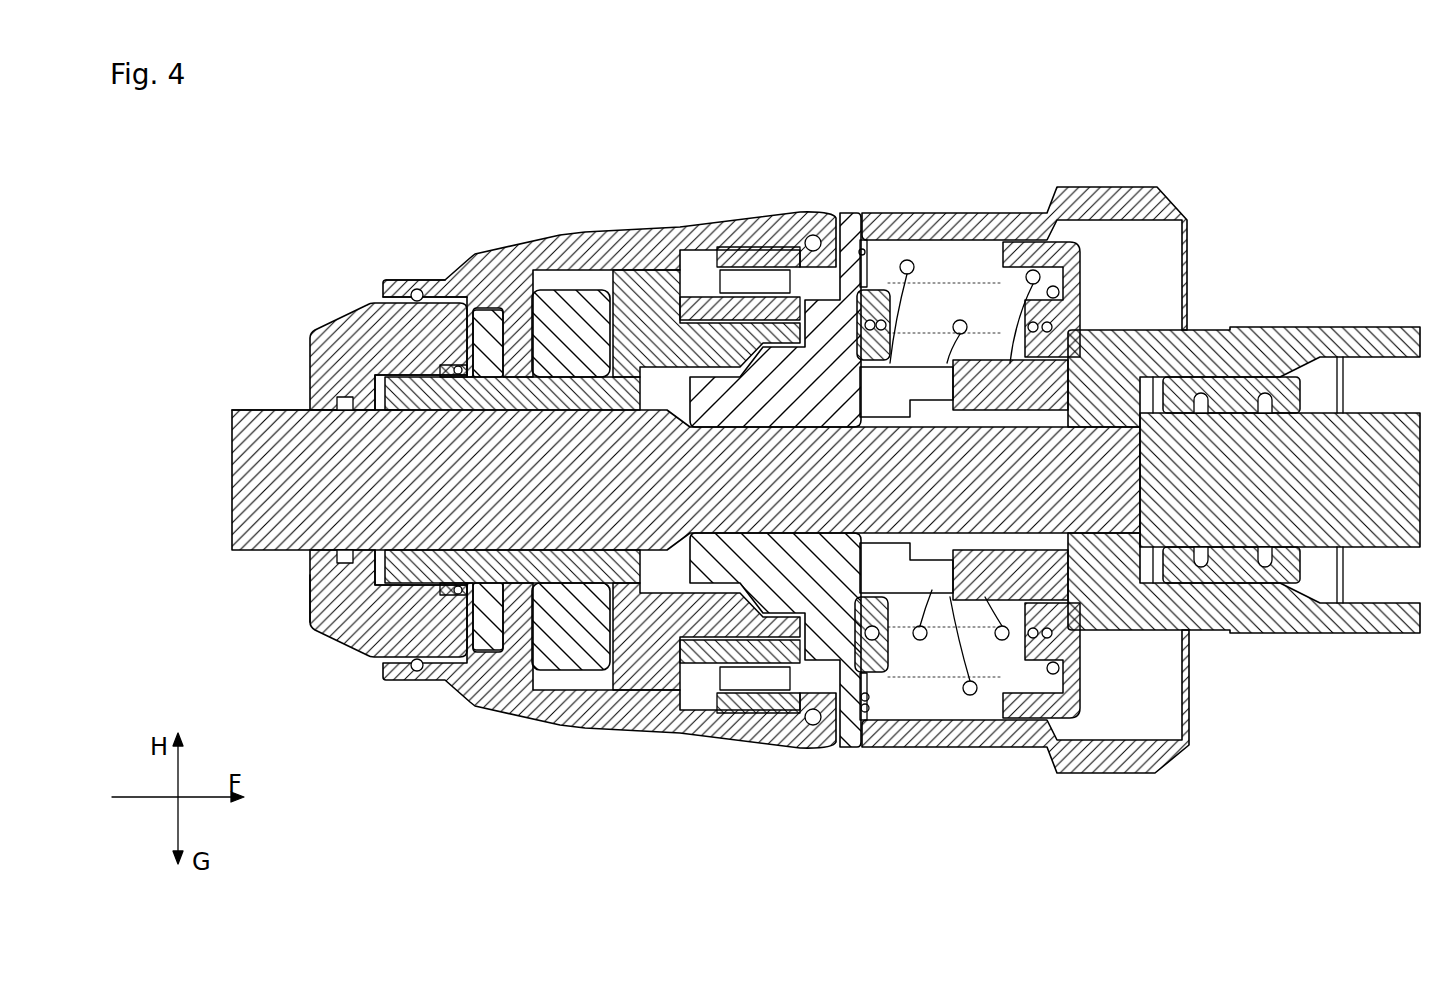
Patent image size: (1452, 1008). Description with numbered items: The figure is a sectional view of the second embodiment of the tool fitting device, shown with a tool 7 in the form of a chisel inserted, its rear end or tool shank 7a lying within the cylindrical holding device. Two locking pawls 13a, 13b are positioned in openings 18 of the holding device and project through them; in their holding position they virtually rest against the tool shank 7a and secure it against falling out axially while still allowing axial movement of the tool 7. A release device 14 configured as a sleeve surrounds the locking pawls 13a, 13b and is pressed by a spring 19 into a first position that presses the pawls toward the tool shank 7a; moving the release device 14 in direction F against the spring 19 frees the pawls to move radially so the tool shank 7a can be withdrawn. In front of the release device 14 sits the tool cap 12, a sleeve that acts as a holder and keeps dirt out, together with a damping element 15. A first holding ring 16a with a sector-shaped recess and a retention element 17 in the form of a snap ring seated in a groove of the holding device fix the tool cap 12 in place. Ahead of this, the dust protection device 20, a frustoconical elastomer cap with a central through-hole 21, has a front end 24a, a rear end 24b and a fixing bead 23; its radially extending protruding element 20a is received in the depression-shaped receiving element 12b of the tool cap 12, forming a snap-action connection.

The tool 7 is at (277, 533).
The rear end (tool shank) 7a is at (1075, 505).
The tool cap 12 is at (452, 275).
The receiving element 12b is at (418, 288).
The locking pawl 13a is at (825, 345).
The locking pawl 13b is at (787, 583).
The release device 14 is at (950, 227).
The damping element 15 is at (557, 333).
The first holding ring 16a is at (487, 327).
The retention element 17 is at (453, 405).
The openings 18 is at (930, 395).
The spring 19 is at (972, 695).
The dust protection device 20 is at (325, 587).
The protruding element 20a is at (410, 284).
The central through-hole 21 is at (330, 423).
The fixing bead 23 is at (410, 380).
The front end 24a is at (320, 347).
The rear end 24b is at (450, 647).